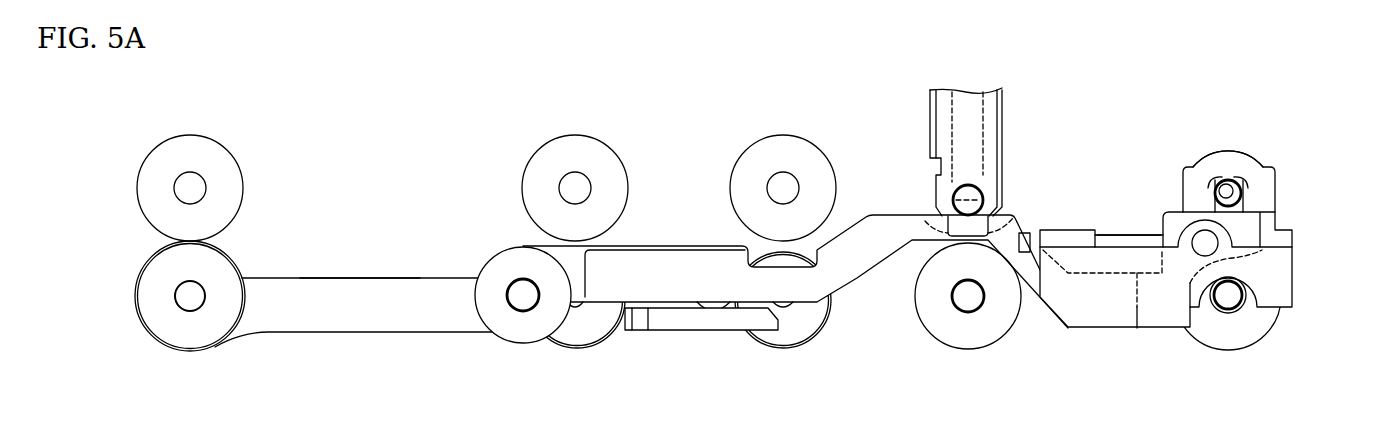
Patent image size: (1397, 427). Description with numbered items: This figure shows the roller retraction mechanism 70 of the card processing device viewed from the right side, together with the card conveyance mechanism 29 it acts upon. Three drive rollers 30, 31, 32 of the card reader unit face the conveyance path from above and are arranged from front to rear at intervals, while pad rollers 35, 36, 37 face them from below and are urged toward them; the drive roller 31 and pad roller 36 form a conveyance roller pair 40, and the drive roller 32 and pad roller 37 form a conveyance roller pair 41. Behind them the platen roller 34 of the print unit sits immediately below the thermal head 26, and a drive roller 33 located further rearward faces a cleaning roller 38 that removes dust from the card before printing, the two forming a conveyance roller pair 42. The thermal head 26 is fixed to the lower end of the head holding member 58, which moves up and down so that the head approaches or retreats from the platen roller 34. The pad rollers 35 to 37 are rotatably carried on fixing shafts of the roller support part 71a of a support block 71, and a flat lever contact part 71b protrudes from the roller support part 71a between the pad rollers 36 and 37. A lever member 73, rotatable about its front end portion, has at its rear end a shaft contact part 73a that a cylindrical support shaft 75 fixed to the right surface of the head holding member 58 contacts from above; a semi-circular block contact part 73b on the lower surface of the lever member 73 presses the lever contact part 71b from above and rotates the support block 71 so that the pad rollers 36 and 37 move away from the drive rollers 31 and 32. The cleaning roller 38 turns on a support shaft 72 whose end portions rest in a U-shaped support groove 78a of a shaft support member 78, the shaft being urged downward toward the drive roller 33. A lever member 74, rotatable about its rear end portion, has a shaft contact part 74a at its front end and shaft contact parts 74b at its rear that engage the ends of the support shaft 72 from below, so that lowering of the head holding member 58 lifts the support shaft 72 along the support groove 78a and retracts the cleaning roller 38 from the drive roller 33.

The thermal head 26 is at (988, 150).
The card conveyance mechanism 29 is at (266, 400).
The drive roller 30 is at (188, 135).
The drive roller 31 is at (576, 135).
The drive roller 32 is at (784, 135).
The drive roller 33 is at (1229, 350).
The platen roller 34 is at (968, 350).
The pad roller 35 is at (189, 350).
The pad roller 36 is at (580, 348).
The pad roller 37 is at (785, 348).
The cleaning roller 38 is at (1240, 152).
The conveyance roller pair 40 is at (500, 137).
The conveyance roller pair 41 is at (716, 137).
The conveyance roller pair 42 is at (1280, 347).
The head holding member 58 is at (1003, 114).
The roller retraction mechanism 70 is at (1320, 168).
The support block 71 is at (397, 334).
The roller support part 71a is at (365, 278).
The lever contact part 71b is at (685, 332).
The support shaft 72 is at (1215, 178).
The lever member 73 is at (677, 246).
The shaft contact part 73a is at (1013, 215).
The block contact part 73b is at (714, 312).
The lever member 74 is at (1125, 328).
The shaft contact part 74a is at (928, 225).
The shaft contact part 74b is at (1243, 212).
The support shaft 75 is at (975, 186).
The shaft support member 78 is at (1127, 235).
The support groove 78a is at (1218, 183).